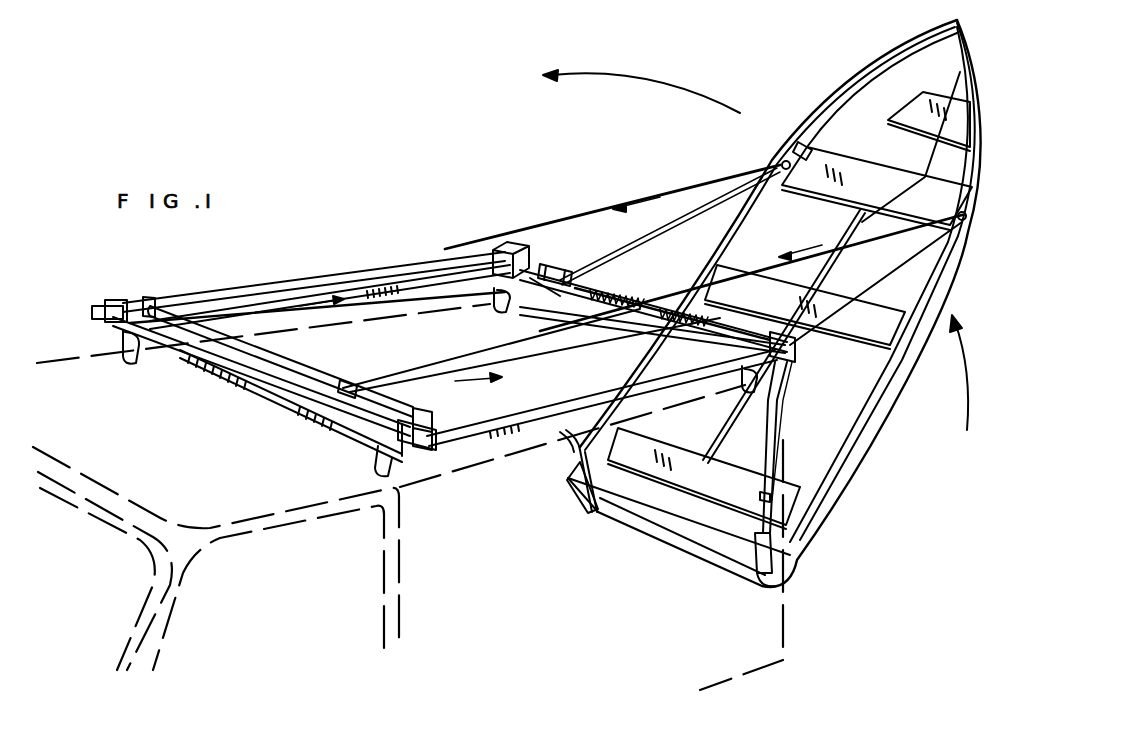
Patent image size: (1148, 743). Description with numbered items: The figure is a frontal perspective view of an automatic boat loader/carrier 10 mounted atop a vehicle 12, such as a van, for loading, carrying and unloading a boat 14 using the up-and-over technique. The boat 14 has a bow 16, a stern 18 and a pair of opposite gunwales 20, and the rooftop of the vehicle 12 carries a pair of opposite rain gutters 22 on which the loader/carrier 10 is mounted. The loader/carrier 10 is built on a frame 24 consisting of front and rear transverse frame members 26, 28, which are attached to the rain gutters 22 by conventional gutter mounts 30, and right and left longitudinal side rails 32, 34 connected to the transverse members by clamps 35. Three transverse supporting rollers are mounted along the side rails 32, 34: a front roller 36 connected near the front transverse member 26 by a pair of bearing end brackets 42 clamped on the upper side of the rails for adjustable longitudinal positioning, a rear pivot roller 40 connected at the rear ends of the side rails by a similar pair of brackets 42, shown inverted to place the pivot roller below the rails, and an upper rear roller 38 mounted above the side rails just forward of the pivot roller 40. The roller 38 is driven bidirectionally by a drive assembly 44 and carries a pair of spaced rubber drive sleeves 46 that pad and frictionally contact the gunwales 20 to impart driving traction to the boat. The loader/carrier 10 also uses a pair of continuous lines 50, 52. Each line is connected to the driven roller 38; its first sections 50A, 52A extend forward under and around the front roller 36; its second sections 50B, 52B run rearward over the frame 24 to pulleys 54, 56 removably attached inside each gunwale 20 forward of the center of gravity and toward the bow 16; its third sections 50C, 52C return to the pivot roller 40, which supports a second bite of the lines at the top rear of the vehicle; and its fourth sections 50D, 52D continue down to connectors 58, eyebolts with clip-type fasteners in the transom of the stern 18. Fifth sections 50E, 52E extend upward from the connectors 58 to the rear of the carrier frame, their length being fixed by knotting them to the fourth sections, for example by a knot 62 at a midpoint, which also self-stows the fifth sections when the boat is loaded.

The loader/carrier 10 is at (320, 256).
The vehicle 12 is at (61, 354).
The boat 14 is at (665, 311).
The bow 16 is at (945, 22).
The stern 18 is at (645, 532).
The gunwales 20 is at (790, 158).
The rain gutters 22 is at (472, 470).
The frame 24 is at (199, 292).
The front transverse frame member 26 is at (242, 388).
The rear transverse frame member 28 is at (612, 330).
The gutter mounts 30 is at (118, 346).
The right longitudinal side rail 32 is at (415, 282).
The left longitudinal side rail 34 is at (476, 424).
The clamps 35 is at (116, 298).
The front roller 36 is at (305, 364).
The upper rear roller 38 is at (572, 274).
The rear pivot roller 40 is at (606, 292).
The bearing end brackets 42 is at (430, 420).
The drive assembly 44 is at (505, 240).
The rubber drive sleeves 46 is at (770, 330).
The continuous line 50 is at (455, 266).
The first line section 50A is at (414, 306).
The second line section 50B is at (614, 208).
The third line section 50C is at (675, 226).
The fourth line section 50D is at (560, 300).
The fifth line section 50E is at (565, 338).
The continuous line 52 is at (656, 352).
The first line section 52A is at (546, 358).
The second line section 52B is at (727, 278).
The third line section 52C is at (910, 267).
The fourth line section 52D is at (780, 413).
The fifth line section 52E is at (765, 420).
The pulley 54 is at (810, 150).
The pulley 56 is at (960, 213).
The connectors 58 is at (590, 522).
The knot 62 is at (572, 452).